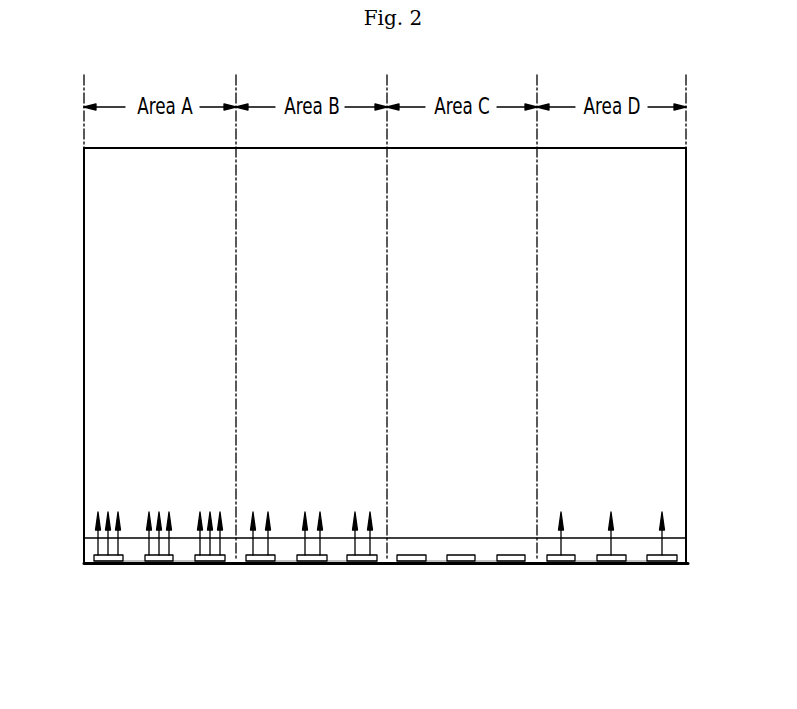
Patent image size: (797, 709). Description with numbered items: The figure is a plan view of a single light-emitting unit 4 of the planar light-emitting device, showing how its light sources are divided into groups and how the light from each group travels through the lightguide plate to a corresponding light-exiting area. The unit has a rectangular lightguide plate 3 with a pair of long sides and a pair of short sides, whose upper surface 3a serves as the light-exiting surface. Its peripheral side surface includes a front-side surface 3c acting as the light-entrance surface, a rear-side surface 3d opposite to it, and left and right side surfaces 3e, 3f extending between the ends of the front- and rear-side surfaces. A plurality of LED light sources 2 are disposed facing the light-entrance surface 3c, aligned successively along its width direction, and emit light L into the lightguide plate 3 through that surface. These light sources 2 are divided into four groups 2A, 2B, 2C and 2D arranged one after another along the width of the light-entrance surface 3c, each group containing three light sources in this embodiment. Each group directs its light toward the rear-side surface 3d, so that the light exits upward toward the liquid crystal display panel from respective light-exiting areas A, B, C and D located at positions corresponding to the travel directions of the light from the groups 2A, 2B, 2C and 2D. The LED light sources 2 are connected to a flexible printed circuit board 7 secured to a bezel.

The LED light source 2 is at (104, 566).
The light source group 2A is at (227, 612).
The light source group 2B is at (378, 612).
The light source group 2C is at (528, 612).
The light source group 2D is at (680, 612).
The lightguide plate 3 is at (637, 147).
The upper surface 3a is at (356, 307).
The front-side surface 3c is at (410, 542).
The rear-side surface 3d is at (420, 147).
The left side surface 3e is at (84, 260).
The right side surface 3f is at (687, 368).
The light-emitting unit 4 is at (687, 270).
The flexible printed circuit board 7 is at (670, 564).
The light L is at (95, 522).